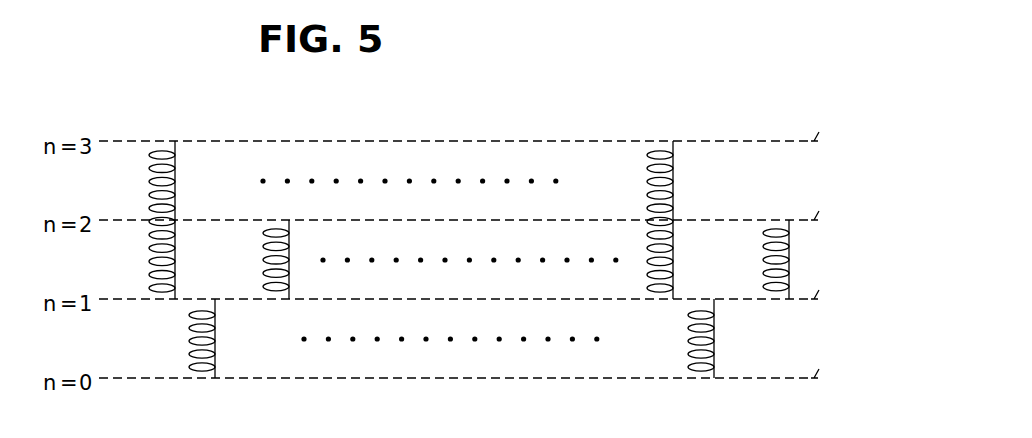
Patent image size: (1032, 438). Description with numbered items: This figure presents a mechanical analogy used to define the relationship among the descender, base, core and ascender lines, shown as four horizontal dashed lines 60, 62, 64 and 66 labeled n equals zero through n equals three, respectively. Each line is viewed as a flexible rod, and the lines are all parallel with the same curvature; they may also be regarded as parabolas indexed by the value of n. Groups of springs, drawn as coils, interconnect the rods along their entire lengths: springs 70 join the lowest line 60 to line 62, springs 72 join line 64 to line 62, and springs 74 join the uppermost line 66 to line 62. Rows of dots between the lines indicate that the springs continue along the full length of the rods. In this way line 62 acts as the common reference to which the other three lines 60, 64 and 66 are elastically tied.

The line 60 is at (819, 368).
The line 62 is at (819, 289).
The line 64 is at (819, 210).
The line 66 is at (819, 131).
The group of springs 70 is at (188, 340).
The group of springs 72 is at (262, 259).
The group of springs 74 is at (148, 181).